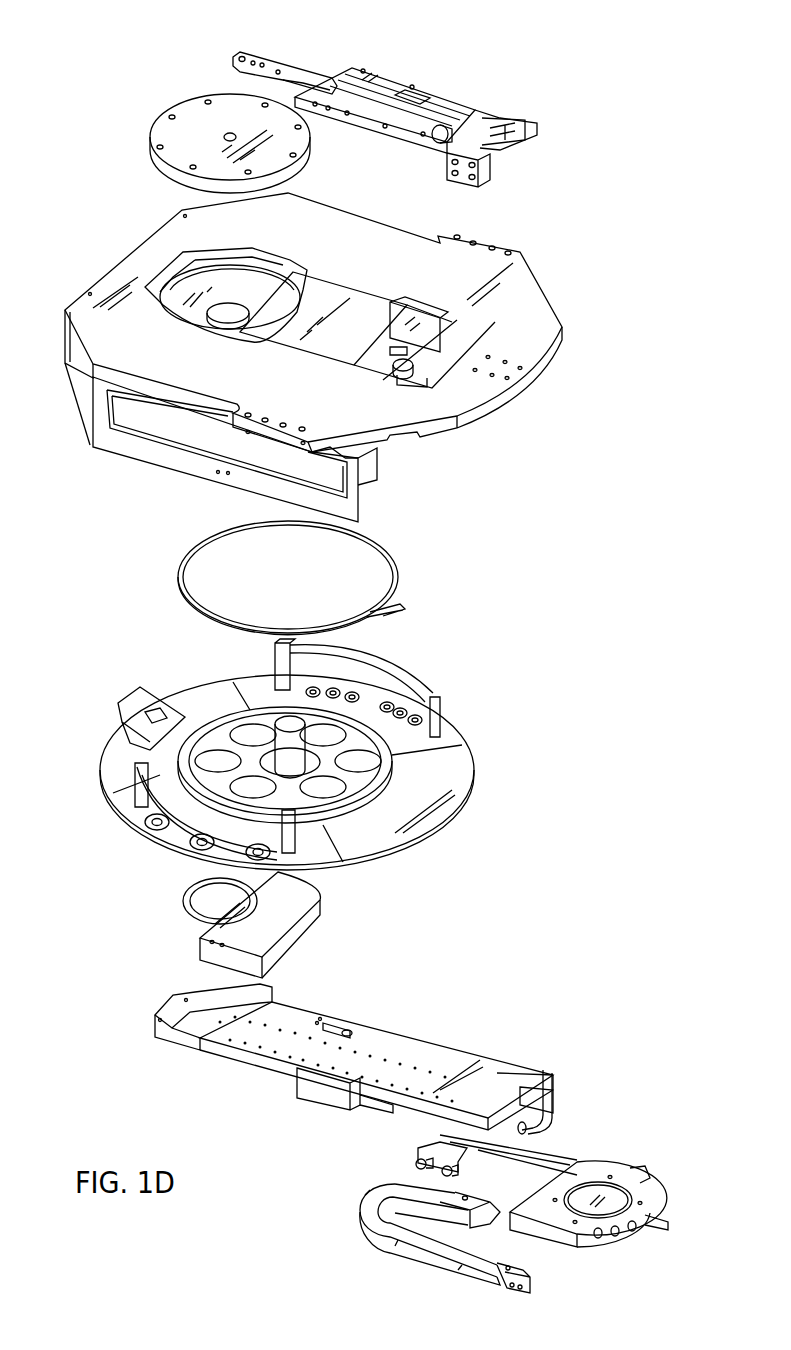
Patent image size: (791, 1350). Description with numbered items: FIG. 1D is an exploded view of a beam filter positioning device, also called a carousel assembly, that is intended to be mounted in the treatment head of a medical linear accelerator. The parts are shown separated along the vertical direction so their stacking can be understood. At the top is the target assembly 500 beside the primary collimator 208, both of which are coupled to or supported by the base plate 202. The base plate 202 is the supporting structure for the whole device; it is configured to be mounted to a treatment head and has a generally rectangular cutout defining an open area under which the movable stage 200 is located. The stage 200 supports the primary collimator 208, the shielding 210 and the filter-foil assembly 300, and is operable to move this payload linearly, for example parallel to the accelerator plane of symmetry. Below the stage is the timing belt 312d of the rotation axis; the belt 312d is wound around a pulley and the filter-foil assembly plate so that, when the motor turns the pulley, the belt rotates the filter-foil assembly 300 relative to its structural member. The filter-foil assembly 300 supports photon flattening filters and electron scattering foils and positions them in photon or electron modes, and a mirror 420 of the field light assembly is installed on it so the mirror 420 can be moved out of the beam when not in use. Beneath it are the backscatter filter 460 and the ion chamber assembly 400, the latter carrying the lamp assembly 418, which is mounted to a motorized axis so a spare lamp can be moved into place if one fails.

The movable stage 200 is at (430, 316).
The base plate 202 is at (137, 268).
The primary collimator 208 is at (168, 128).
The shielding 210 is at (370, 302).
The filter-foil assembly 300 is at (463, 732).
The timing belt 312d is at (395, 553).
The ion chamber assembly 400 is at (592, 1153).
The lamp assembly 418 is at (416, 1166).
The mirror 420 is at (132, 698).
The backscatter filter 460 is at (178, 912).
The target assembly 500 is at (418, 76).